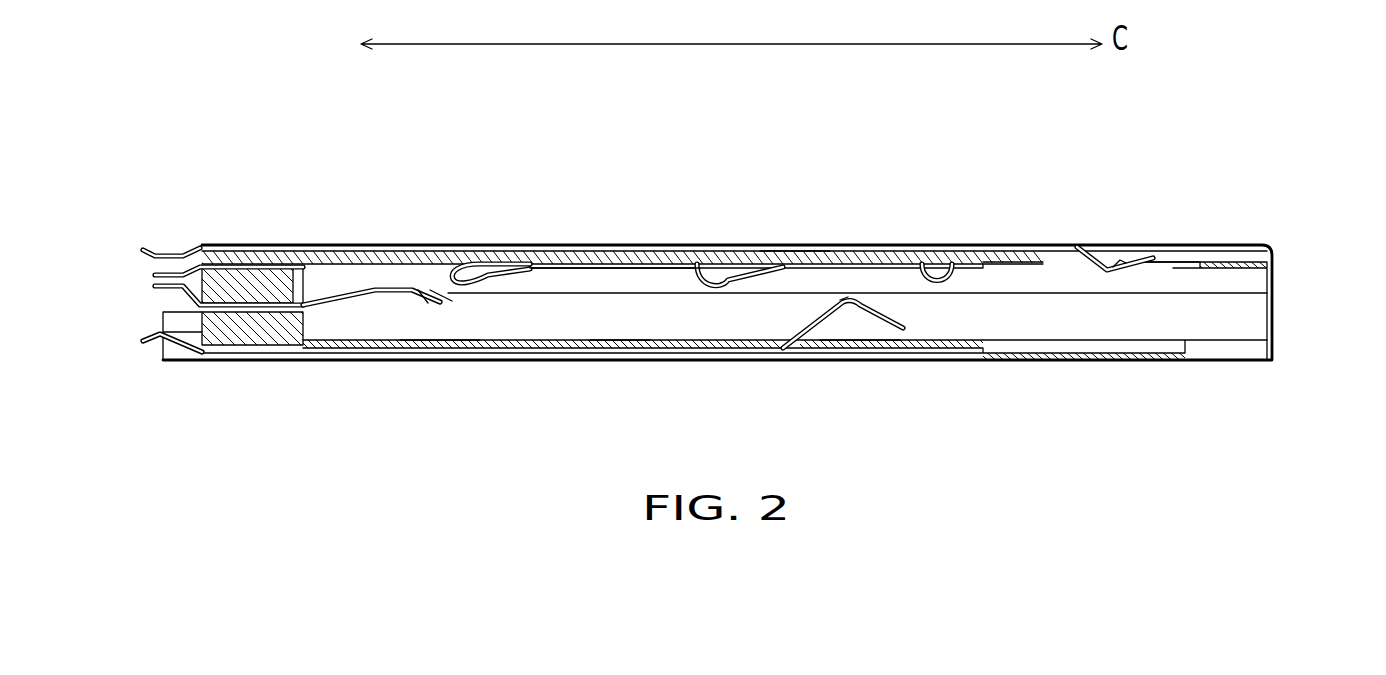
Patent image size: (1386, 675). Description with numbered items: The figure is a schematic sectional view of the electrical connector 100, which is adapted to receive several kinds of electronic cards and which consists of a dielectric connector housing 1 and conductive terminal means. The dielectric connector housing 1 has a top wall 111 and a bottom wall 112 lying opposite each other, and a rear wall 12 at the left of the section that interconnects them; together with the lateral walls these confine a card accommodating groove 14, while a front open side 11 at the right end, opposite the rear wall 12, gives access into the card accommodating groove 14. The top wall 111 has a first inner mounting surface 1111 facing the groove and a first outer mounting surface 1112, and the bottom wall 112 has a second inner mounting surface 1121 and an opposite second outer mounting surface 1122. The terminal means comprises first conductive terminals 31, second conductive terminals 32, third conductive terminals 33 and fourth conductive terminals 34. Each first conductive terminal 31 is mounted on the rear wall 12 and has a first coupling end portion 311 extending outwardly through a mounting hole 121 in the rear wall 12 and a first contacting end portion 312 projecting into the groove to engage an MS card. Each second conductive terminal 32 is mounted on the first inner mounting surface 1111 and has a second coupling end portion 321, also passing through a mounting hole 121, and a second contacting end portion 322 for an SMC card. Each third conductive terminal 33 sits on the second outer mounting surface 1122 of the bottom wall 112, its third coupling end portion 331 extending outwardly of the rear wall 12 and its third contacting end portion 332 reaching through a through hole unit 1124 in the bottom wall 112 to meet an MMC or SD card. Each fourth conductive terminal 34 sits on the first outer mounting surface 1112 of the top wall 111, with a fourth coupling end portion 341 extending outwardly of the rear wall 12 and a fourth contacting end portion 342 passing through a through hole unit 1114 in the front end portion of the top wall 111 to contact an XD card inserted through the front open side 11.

The dielectric connector housing 1 is at (1240, 240).
The front open side 11 is at (1273, 303).
The rear wall 12 is at (247, 336).
The card accommodating groove 14 is at (714, 318).
The first conductive terminal 31 is at (367, 304).
The second conductive terminal 32 is at (482, 265).
The third conductive terminal 33 is at (882, 322).
The fourth conductive terminal 34 is at (1106, 275).
The electrical connector 100 is at (1043, 230).
The top wall 111 is at (597, 262).
The bottom wall 112 is at (518, 342).
The mounting hole 121 is at (277, 275).
The first coupling end portion 311 is at (150, 287).
The first contacting end portion 312 is at (405, 288).
The second coupling end portion 321 is at (153, 273).
The second contacting end portion 322 is at (447, 272).
The third coupling end portion 331 is at (147, 341).
The third contacting end portion 332 is at (851, 299).
The fourth coupling end portion 341 is at (150, 256).
The fourth contacting end portion 342 is at (1125, 272).
The first inner mounting surface 1111 is at (958, 262).
The first outer mounting surface 1112 is at (787, 256).
The through hole unit 1114 is at (1177, 268).
The second inner mounting surface 1121 is at (605, 340).
The second outer mounting surface 1122 is at (438, 345).
The through hole unit 1124 is at (841, 347).